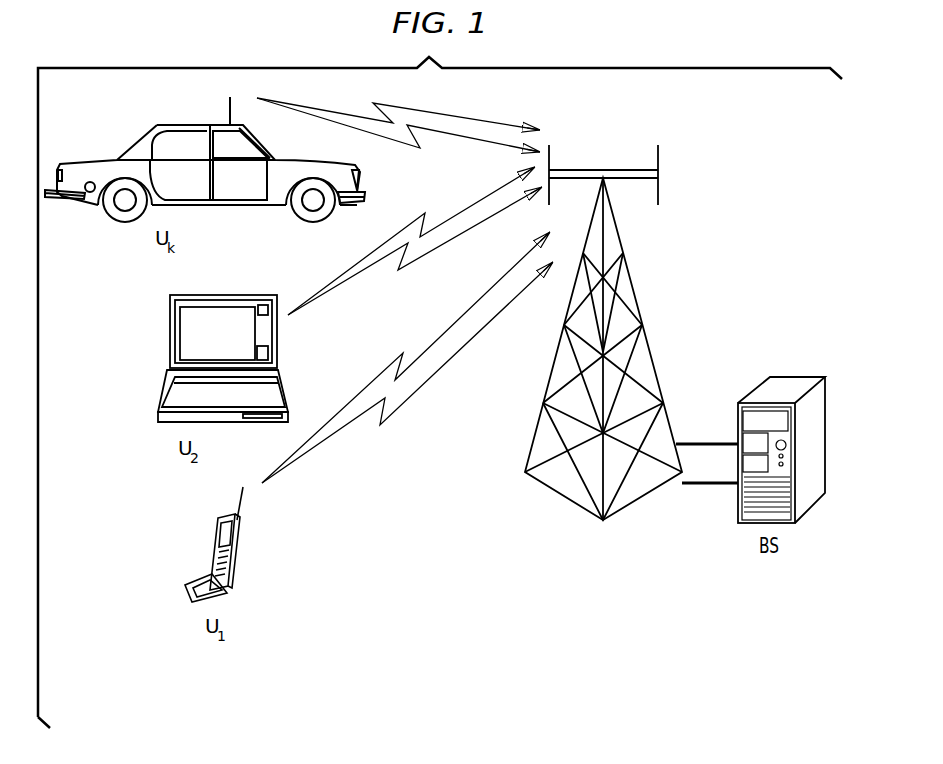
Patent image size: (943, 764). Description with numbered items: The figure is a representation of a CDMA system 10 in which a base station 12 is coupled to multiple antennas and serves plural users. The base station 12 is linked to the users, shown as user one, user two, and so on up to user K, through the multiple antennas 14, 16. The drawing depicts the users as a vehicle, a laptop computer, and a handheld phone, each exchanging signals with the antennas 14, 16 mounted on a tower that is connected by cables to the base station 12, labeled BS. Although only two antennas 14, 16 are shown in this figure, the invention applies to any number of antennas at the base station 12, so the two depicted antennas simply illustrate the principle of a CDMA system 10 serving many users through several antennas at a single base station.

The CDMA system 10 is at (681, 353).
The base station 12 is at (797, 377).
The antenna 14 is at (551, 160).
The antenna 16 is at (659, 160).